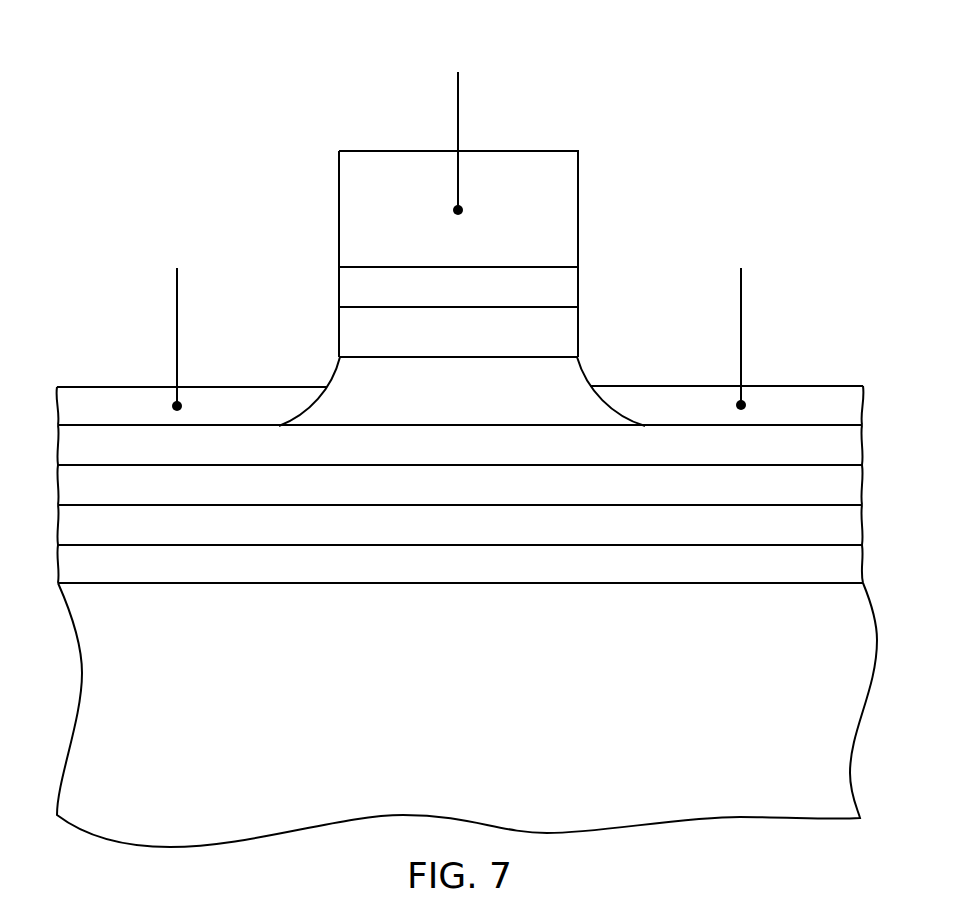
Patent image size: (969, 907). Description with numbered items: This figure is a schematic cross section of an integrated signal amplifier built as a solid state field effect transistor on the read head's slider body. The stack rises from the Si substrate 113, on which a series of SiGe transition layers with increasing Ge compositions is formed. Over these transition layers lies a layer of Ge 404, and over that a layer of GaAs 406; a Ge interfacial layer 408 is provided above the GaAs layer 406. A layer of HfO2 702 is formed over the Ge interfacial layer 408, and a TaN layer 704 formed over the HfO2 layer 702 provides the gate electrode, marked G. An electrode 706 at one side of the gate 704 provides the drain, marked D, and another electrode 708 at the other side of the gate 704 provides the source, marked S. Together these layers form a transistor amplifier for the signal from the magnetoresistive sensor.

The slider body substrate 113 is at (521, 695).
The layer of Ge 404 is at (494, 446).
The layer of GaAs 406 is at (494, 393).
The Ge interfacial layer 408 is at (494, 331).
The layer of HfO2 702 is at (489, 289).
The TaN layer 704 is at (485, 220).
The electrode 706 is at (731, 393).
The electrode 708 is at (189, 396).